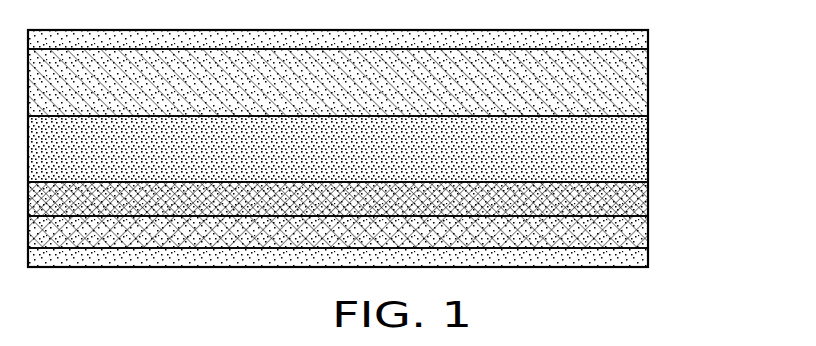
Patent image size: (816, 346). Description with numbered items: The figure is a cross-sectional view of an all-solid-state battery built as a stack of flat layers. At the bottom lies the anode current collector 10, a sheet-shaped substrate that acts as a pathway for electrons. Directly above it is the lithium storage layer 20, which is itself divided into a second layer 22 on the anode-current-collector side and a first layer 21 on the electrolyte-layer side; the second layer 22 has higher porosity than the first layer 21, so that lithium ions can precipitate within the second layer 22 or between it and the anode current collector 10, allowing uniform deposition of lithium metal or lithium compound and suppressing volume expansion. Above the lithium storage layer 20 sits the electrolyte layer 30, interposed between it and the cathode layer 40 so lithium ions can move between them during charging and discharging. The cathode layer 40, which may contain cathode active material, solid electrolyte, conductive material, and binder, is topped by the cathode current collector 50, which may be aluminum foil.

The anode current collector 10 is at (649, 253).
The lithium storage layer 20 is at (400, 215).
The first layer 21 is at (649, 195).
The second layer 22 is at (649, 227).
The electrolyte layer 30 is at (649, 143).
The cathode layer 40 is at (649, 82).
The cathode current collector 50 is at (649, 35).